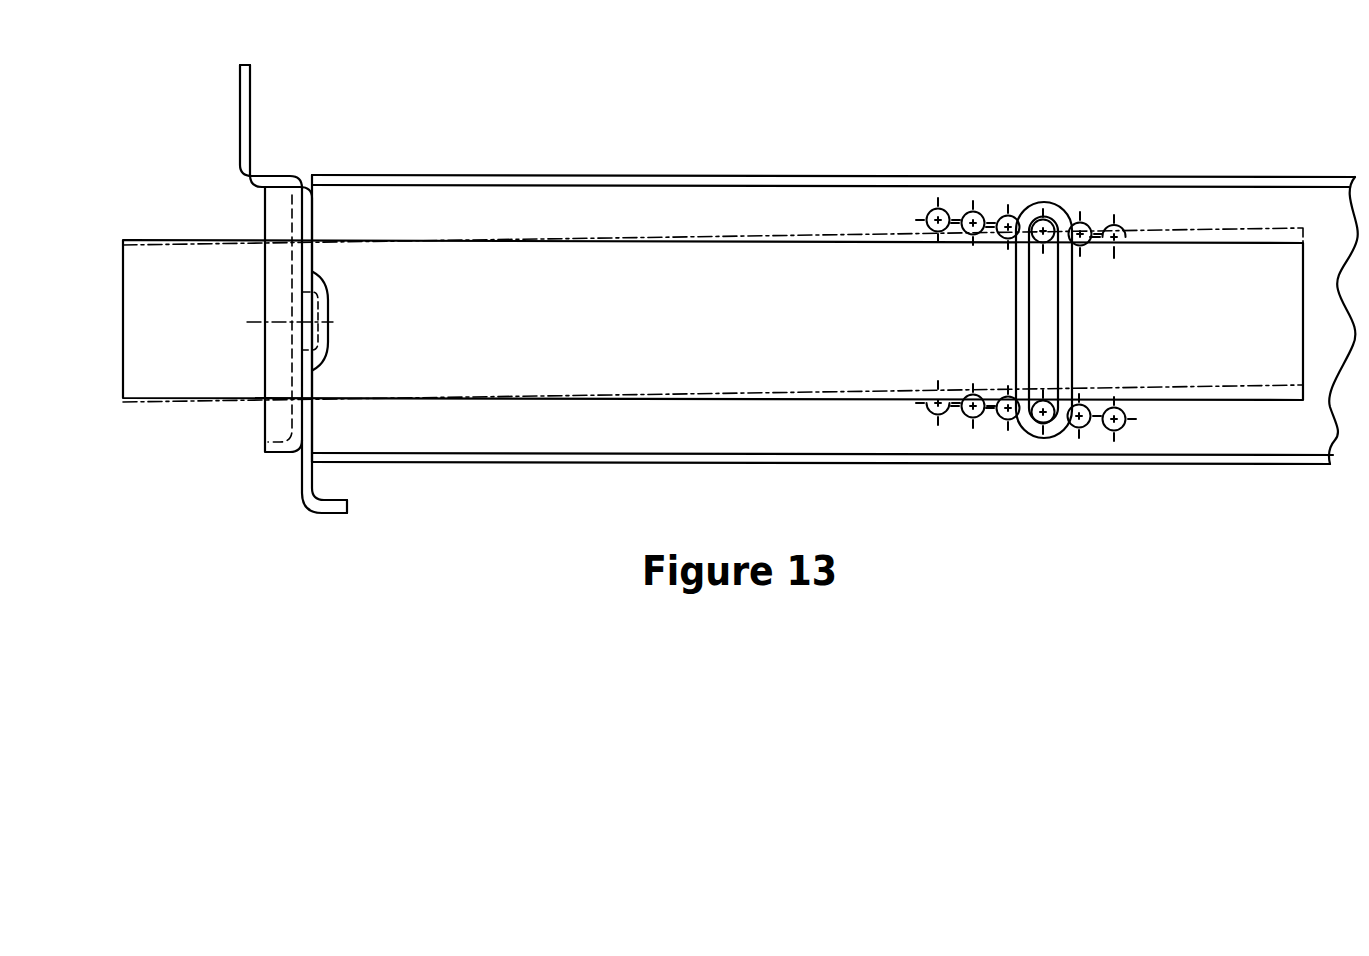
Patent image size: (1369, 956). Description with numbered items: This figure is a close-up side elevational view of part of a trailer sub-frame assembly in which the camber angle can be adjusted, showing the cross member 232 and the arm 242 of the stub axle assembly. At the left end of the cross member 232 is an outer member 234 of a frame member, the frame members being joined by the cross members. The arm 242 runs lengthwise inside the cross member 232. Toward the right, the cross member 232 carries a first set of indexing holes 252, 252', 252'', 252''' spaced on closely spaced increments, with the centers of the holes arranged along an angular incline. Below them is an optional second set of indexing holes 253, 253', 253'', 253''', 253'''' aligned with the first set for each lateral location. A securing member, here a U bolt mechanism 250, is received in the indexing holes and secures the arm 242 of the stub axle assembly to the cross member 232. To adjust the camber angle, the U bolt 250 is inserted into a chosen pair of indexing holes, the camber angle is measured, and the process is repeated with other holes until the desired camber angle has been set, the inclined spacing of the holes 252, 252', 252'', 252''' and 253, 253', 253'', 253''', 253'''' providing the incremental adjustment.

The cross member 232 is at (1225, 182).
The outer member 234 is at (253, 116).
The arm 242 is at (1182, 400).
The U bolt mechanism 250 is at (1058, 443).
The indexing hole 252 is at (935, 181).
The indexing hole 252' is at (993, 182).
The indexing hole 252'' is at (1056, 188).
The indexing hole 252''' is at (1118, 272).
The indexing hole 253 is at (904, 442).
The indexing hole 253' is at (951, 448).
The indexing hole 253'' is at (999, 454).
The indexing hole 253''' is at (1110, 456).
The indexing hole 253'''' is at (1169, 457).